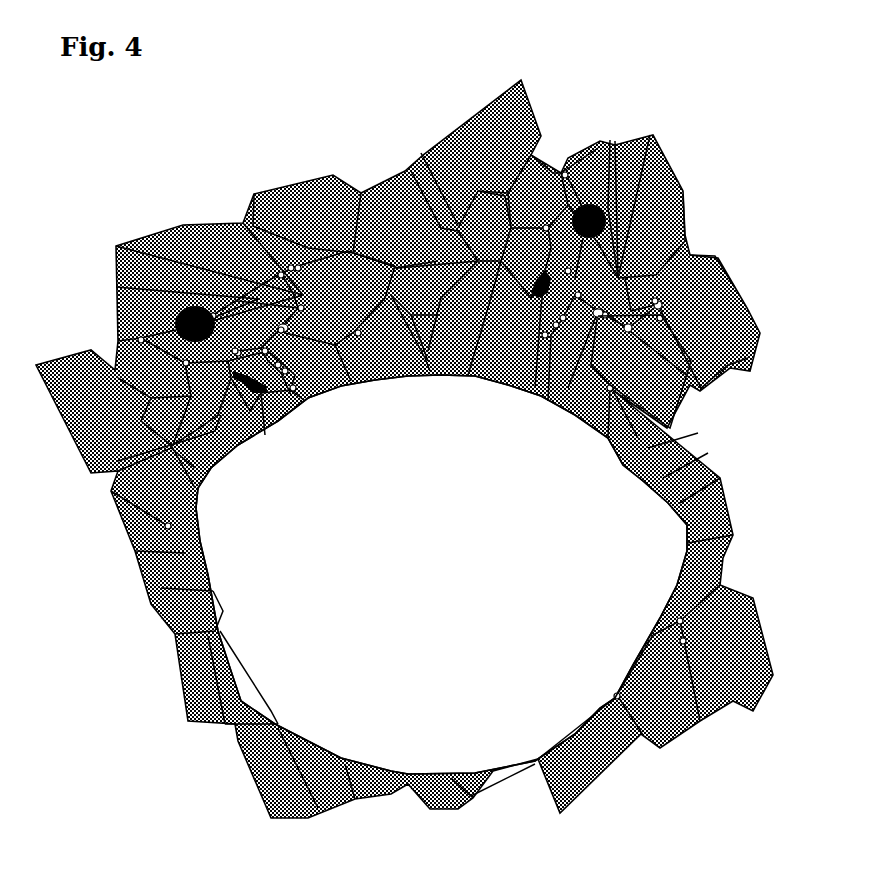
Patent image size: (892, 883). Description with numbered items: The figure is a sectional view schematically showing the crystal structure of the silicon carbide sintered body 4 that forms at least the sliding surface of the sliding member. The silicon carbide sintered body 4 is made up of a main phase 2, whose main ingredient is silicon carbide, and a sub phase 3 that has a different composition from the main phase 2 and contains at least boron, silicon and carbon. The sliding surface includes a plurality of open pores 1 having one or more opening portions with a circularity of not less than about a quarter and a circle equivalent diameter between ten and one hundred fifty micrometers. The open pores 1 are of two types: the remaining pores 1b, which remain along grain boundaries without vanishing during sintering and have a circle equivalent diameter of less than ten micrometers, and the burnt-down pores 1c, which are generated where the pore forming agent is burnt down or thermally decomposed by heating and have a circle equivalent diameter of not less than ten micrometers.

The open pores 1 is at (806, 398).
The remaining pores 1b is at (602, 377).
The burnt-down pores 1c is at (625, 485).
The main phase 2 is at (547, 157).
The sub phase 3 is at (183, 298).
The silicon carbide sintered body 4 is at (689, 107).